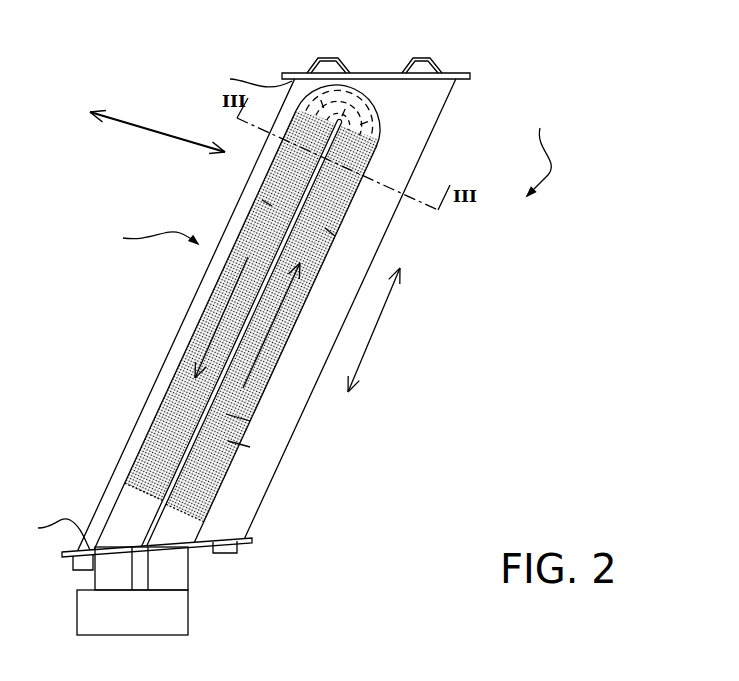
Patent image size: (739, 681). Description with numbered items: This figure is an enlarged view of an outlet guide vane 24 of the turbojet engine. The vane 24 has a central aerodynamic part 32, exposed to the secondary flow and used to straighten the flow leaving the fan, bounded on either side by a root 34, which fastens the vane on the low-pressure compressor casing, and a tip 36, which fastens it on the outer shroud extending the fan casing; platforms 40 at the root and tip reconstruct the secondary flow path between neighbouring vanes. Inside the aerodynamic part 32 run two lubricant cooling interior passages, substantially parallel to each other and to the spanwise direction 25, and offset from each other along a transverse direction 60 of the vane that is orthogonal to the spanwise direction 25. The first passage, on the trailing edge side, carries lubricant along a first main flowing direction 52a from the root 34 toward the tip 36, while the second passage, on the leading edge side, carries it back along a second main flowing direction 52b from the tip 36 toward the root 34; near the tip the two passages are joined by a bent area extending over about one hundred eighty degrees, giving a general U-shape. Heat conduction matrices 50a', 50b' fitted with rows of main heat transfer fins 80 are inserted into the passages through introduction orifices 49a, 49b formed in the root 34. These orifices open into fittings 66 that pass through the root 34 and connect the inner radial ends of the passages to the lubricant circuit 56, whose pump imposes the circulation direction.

The outlet guide vane 24 is at (542, 151).
The spanwise direction 25 is at (392, 328).
The aerodynamic part 32 is at (147, 238).
The root 34 is at (228, 552).
The tip 36 is at (422, 71).
The platforms 40 is at (149, 308).
The introduction orifice 49a is at (168, 543).
The introduction orifice 49b is at (127, 547).
The heat conduction matrix 50a' is at (399, 246).
The heat conduction matrix 50b' is at (216, 195).
The first main flowing direction 52a is at (252, 373).
The second main flowing direction 52b is at (213, 313).
The lubricant circuit 56 is at (172, 623).
The transverse direction 60 is at (153, 136).
The fittings 66 is at (118, 570).
The main heat transfer fins 80 is at (228, 443).